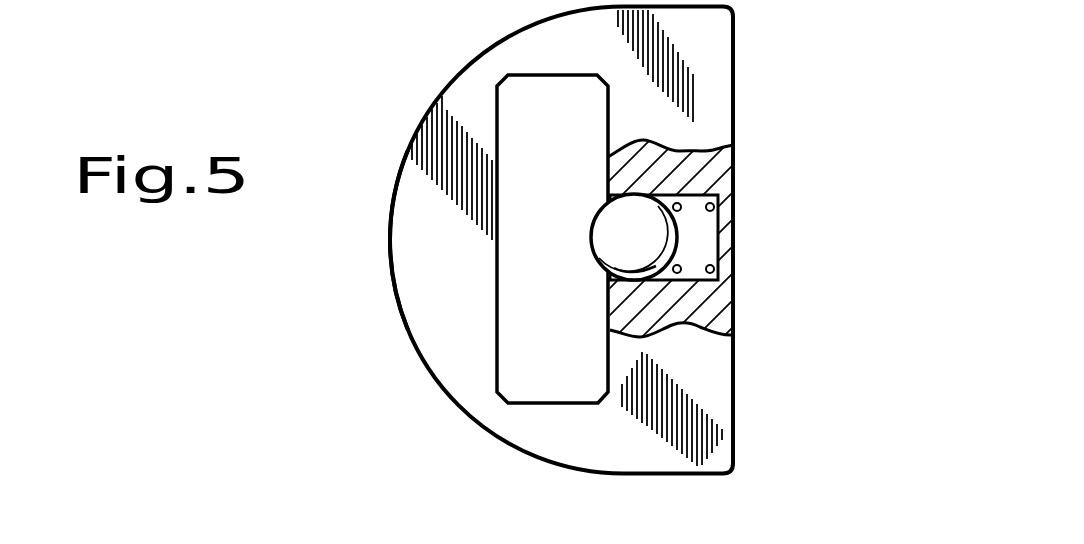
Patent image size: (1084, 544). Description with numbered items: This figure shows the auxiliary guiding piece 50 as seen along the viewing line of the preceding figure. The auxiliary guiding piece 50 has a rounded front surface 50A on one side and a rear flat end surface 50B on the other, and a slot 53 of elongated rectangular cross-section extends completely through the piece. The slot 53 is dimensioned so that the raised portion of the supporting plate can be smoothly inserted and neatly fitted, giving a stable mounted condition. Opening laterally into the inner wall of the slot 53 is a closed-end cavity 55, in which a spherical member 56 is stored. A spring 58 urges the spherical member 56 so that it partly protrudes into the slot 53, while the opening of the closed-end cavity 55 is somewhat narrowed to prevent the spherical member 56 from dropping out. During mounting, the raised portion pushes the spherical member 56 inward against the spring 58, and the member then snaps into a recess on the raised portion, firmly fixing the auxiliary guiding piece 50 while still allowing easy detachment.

The auxiliary guiding piece 50 is at (698, 89).
The rounded front surface 50A is at (393, 295).
The rear flat end surface 50B is at (735, 377).
The slot 53 is at (503, 350).
The closed-end cavity 55 is at (690, 280).
The spherical member 56 is at (640, 223).
The spring 58 is at (662, 195).